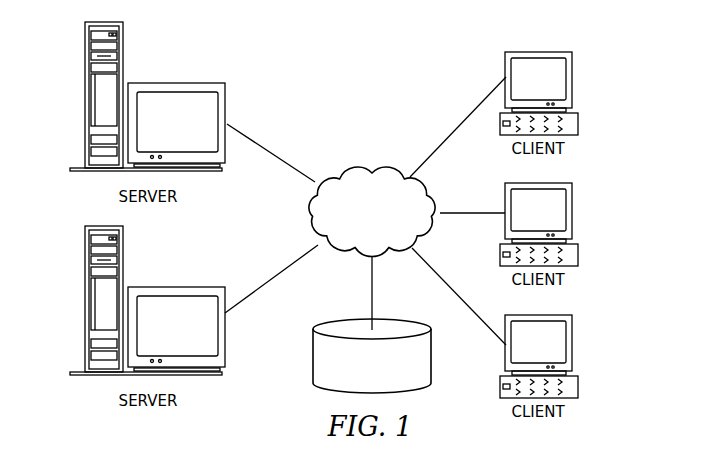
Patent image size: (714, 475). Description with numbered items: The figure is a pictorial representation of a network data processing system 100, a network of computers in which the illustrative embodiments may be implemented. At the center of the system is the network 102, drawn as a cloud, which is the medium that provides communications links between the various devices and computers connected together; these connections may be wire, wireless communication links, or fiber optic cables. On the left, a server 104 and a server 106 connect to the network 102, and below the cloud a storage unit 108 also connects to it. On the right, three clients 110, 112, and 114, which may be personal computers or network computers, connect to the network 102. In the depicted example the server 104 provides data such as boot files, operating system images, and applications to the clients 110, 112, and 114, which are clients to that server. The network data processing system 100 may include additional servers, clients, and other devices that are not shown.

The network data processing system 100 is at (416, 63).
The network 102 is at (345, 166).
The server 104 is at (85, 100).
The server 106 is at (85, 305).
The storage unit 108 is at (313, 368).
The client 110 is at (572, 78).
The client 112 is at (572, 212).
The client 114 is at (572, 343).